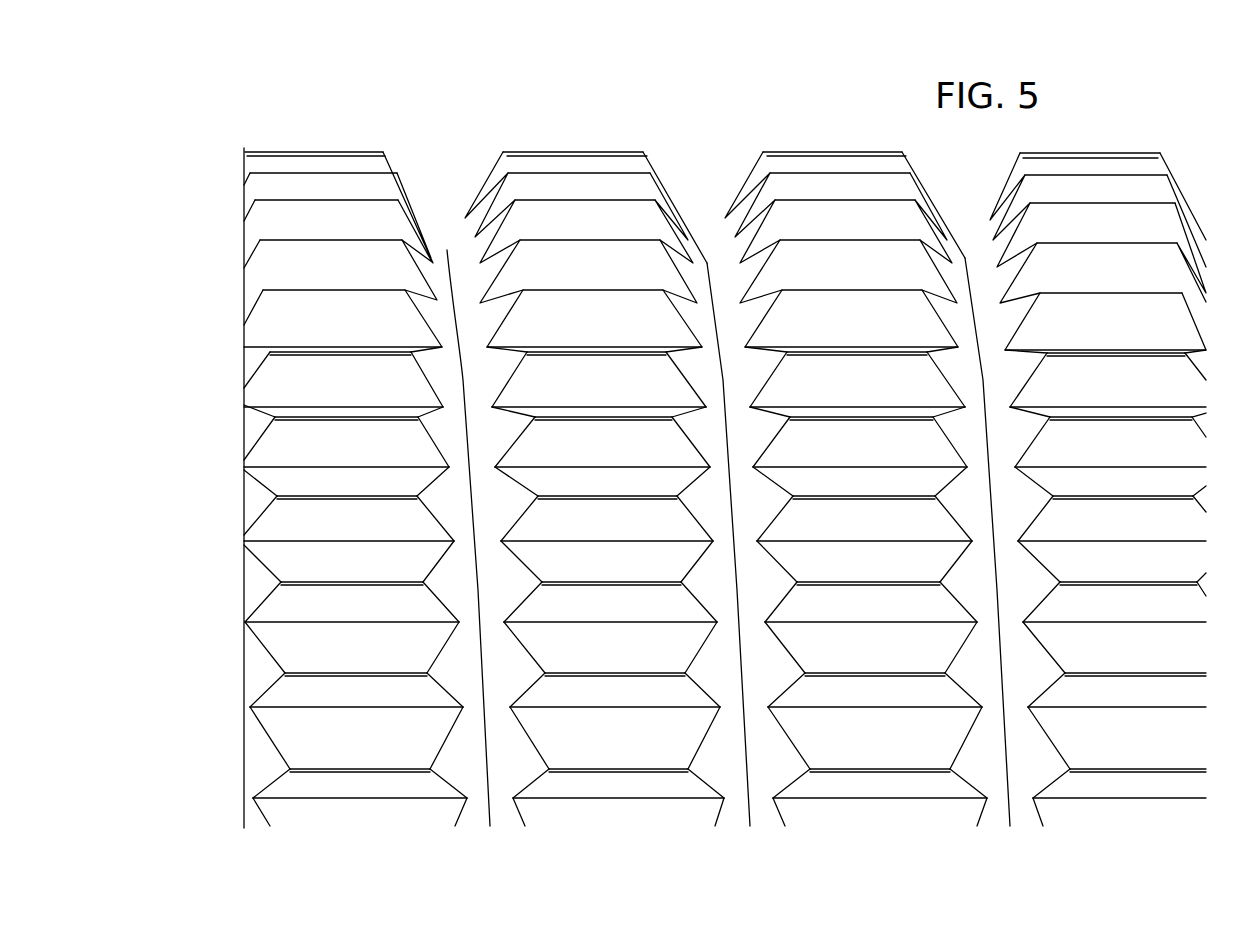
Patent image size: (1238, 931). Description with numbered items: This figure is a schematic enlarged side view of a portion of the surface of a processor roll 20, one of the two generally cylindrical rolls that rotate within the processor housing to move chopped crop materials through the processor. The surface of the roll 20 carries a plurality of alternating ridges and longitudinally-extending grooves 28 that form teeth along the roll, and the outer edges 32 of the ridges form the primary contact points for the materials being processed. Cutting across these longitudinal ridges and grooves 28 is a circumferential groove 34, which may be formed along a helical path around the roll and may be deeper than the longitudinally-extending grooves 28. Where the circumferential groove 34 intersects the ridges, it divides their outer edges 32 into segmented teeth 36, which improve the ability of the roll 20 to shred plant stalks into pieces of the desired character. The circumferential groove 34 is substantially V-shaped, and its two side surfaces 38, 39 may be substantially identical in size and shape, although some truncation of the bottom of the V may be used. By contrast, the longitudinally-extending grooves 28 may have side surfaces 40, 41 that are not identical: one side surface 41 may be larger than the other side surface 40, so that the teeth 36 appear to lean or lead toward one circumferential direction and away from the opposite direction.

The roll 20 is at (208, 110).
The grooves 28 is at (297, 467).
The outer edges 32 is at (307, 580).
The circumferential groove 34 is at (463, 383).
The segmented teeth 36 is at (306, 598).
The side surface 38 is at (440, 275).
The side surface 39 is at (468, 245).
The side surface 40 is at (293, 685).
The side surface 41 is at (306, 733).